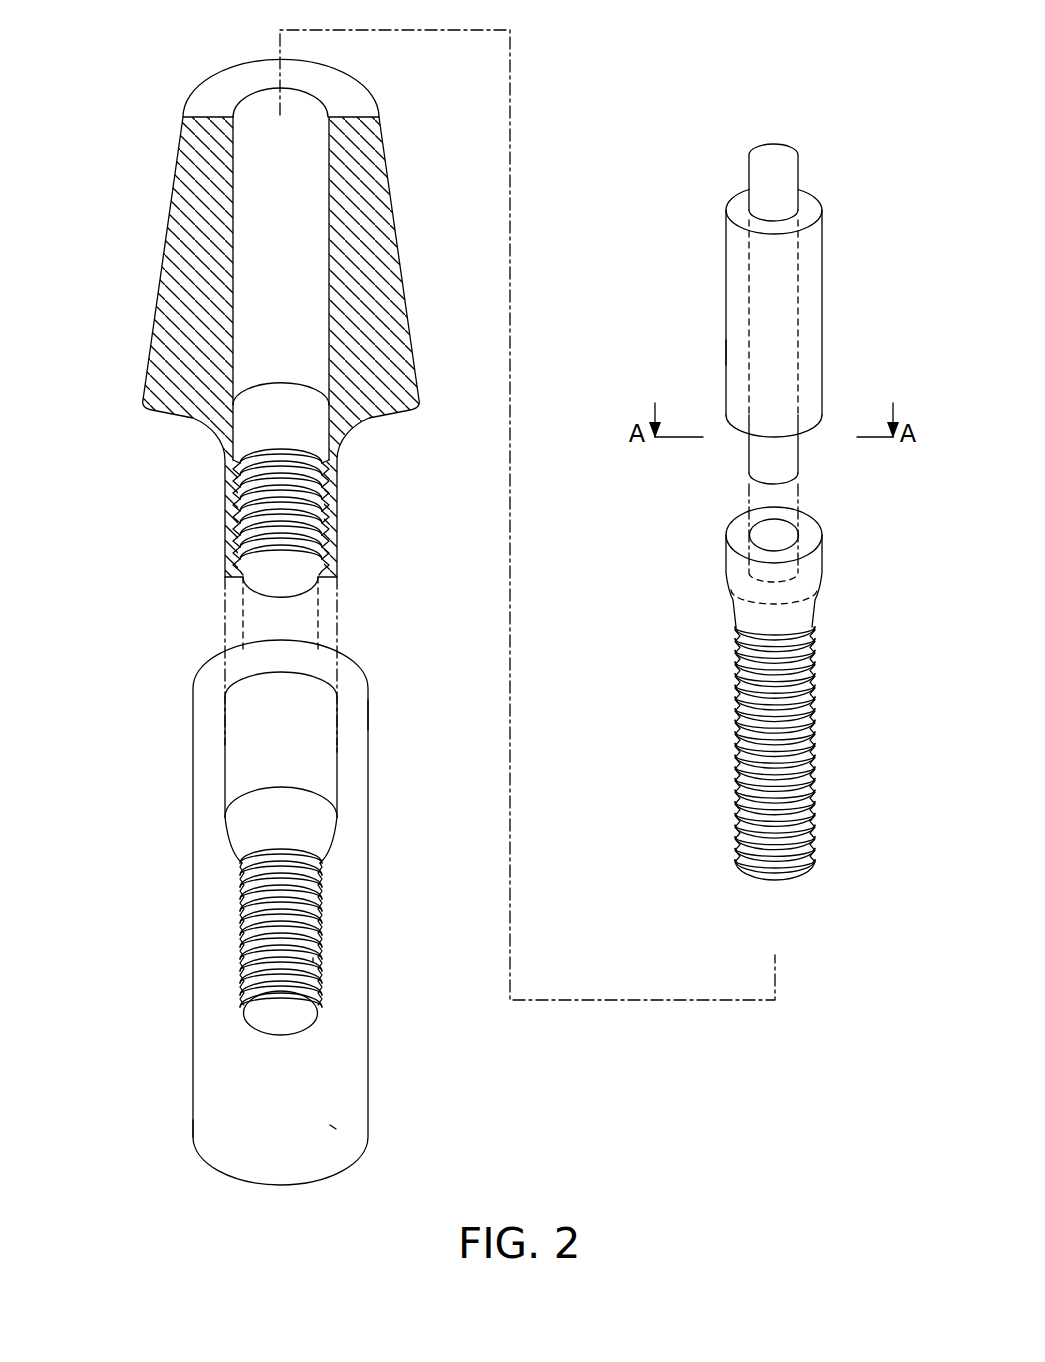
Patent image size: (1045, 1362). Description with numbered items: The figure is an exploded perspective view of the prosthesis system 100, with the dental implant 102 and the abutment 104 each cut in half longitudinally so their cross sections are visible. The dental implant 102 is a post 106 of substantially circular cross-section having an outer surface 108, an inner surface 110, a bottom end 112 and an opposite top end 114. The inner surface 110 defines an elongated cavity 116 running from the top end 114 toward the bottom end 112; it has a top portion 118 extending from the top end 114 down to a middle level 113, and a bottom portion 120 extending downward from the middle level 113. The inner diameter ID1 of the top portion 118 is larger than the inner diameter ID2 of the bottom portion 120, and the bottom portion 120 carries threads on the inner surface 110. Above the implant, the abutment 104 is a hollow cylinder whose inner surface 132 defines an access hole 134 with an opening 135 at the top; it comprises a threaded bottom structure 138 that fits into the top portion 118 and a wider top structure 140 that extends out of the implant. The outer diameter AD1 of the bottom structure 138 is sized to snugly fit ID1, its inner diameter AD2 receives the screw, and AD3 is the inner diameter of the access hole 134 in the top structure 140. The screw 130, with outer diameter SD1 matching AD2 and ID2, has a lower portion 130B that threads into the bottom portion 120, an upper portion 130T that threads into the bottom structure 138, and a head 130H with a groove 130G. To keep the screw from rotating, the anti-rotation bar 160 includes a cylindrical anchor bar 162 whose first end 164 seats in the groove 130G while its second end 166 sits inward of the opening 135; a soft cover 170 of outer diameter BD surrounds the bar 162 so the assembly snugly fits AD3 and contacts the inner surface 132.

The prosthesis system 100 is at (852, 103).
The dental implant 102 is at (183, 648).
The abutment 104 is at (153, 117).
The post 106 is at (333, 1127).
The outer surface 108 is at (369, 715).
The inner surface 110 is at (337, 749).
The first longitudinal end 112 is at (193, 1133).
The middle level 113 is at (225, 818).
The second longitudinal end 114 is at (225, 715).
The elongated cavity 116 is at (298, 774).
The first portion 118 is at (116, 695).
The second portion 120 is at (116, 888).
The screw 130 is at (777, 691).
The groove 130G is at (782, 535).
The head 130H is at (802, 578).
The upper portion 130T is at (718, 642).
The lower portion 130B is at (718, 748).
The inner surface 132 is at (328, 230).
The access hole 134 is at (293, 268).
The opening 135 is at (303, 90).
The bottom structure 138 is at (230, 500).
The top structure 140 is at (193, 287).
The anti-rotation bar 160 is at (746, 279).
The anchor bar 162 is at (768, 303).
The first end 164 is at (775, 482).
The second end 166 is at (775, 155).
The cover 170 is at (733, 353).
The outer diameter AD1 is at (162, 537).
The inner diameter AD2 is at (243, 592).
The inner diameter AD3 is at (233, 167).
The outer diameter BD is at (895, 243).
The inner diameter ID1 is at (225, 735).
The inner diameter ID2 is at (243, 1013).
The outer diameter SD1 is at (738, 862).